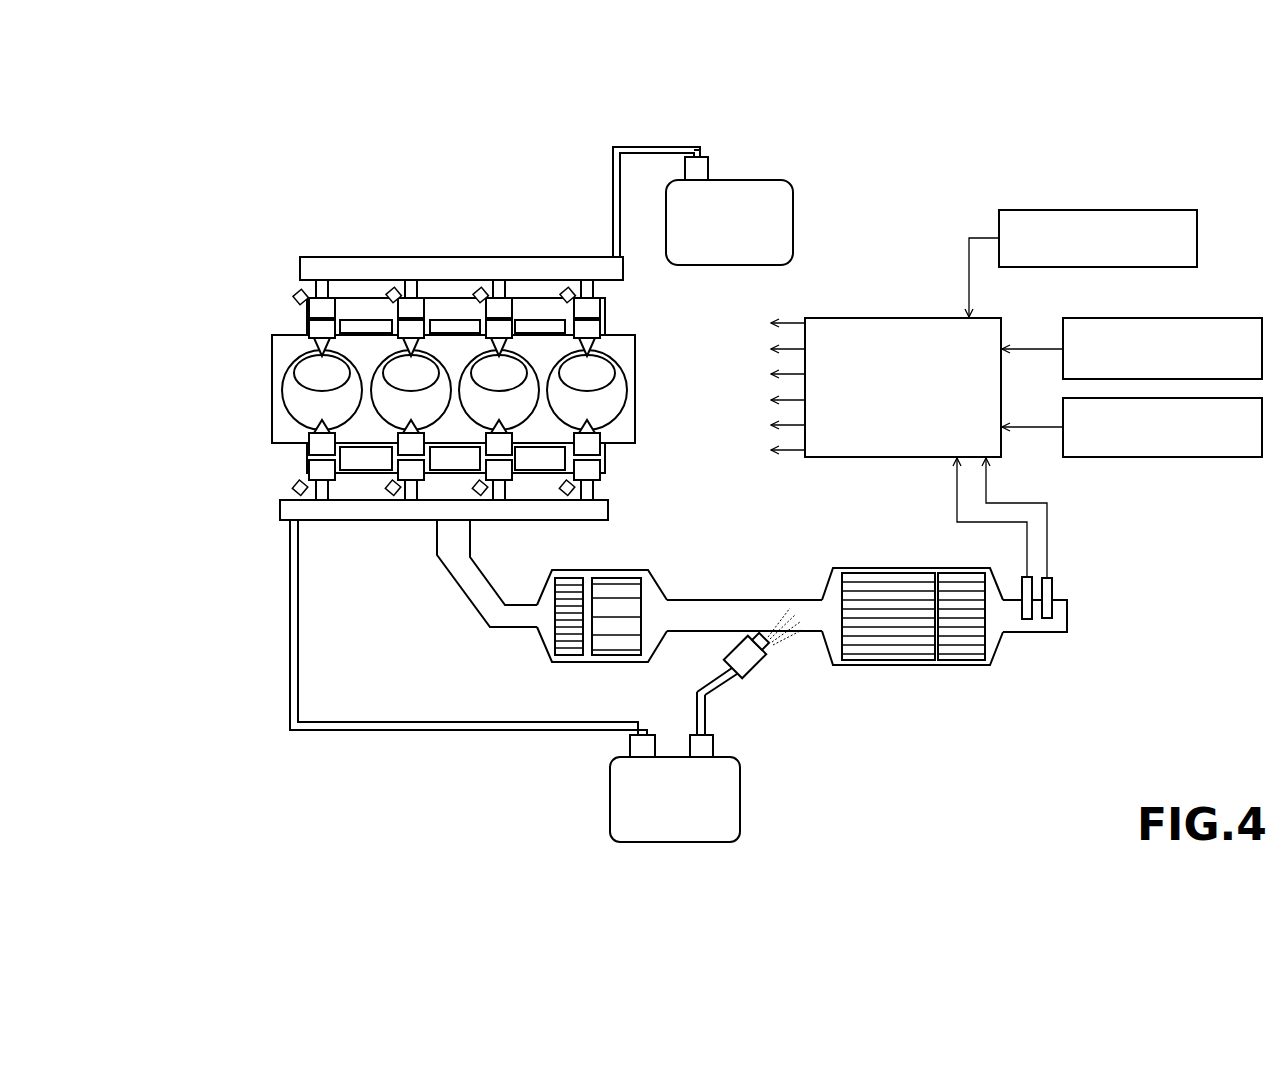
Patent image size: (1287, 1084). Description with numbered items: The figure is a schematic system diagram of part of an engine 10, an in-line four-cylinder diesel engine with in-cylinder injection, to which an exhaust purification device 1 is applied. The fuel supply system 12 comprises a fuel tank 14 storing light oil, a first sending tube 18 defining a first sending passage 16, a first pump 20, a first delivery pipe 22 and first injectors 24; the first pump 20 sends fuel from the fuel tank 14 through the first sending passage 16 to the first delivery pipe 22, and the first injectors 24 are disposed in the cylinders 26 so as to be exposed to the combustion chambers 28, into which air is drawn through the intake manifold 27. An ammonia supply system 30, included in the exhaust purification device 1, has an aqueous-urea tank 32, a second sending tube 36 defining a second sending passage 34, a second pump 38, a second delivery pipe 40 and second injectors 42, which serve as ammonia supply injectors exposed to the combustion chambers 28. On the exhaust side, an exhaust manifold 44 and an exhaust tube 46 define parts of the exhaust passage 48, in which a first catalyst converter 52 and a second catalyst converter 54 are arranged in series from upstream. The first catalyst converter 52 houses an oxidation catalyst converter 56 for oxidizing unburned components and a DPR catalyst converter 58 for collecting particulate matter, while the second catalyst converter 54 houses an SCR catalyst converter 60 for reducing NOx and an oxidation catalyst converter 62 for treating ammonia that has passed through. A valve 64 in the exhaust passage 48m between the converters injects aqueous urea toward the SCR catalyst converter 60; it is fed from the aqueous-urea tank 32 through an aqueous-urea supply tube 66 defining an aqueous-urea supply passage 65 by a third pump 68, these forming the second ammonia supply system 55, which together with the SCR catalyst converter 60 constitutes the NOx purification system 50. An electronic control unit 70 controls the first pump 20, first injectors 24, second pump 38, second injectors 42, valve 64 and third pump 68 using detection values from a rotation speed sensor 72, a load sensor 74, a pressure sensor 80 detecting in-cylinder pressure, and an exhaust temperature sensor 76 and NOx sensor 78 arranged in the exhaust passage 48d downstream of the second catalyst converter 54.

The exhaust purification device 1 is at (382, 782).
The engine 10 is at (282, 212).
The fuel supply system 12 is at (238, 300).
The fuel tank 14 is at (786, 180).
The first sending passage 16 is at (645, 147).
The first sending tube 18 is at (698, 147).
The first pump 20 is at (710, 157).
The first delivery pipe 22 is at (368, 257).
The first injectors 24 is at (322, 300).
The cylinders 26 is at (338, 358).
The intake manifold 27 is at (607, 308).
The combustion chambers 28 is at (300, 403).
The ammonia supply system 30 is at (268, 570).
The aqueous-urea tank 32 is at (615, 812).
The second sending passage 34 is at (528, 732).
The second sending tube 36 is at (410, 722).
The second pump 38 is at (628, 748).
The second delivery pipe 40 is at (358, 520).
The second injectors 42 is at (322, 500).
The exhaust manifold 44 is at (607, 478).
The exhaust tube 46 is at (490, 628).
The exhaust passage 48 is at (473, 592).
The exhaust passage downstream of the DPR catalyst converter 48m is at (743, 600).
The exhaust passage downstream of the second catalyst converter 48d is at (1008, 622).
The NOx purification system 50 is at (908, 723).
The first catalyst converter 52 is at (623, 568).
The second catalyst converter 54 is at (875, 568).
The second ammonia supply system 55 is at (773, 787).
The oxidation catalyst converter 56 is at (560, 660).
The DPR catalyst converter 58 is at (642, 590).
The SCR catalyst converter 60 is at (893, 668).
The oxidation catalyst converter 62 is at (950, 662).
The valve 64 is at (760, 660).
The aqueous-urea supply passage 65 is at (706, 723).
The aqueous-urea supply tube 66 is at (707, 702).
The third pump 68 is at (715, 745).
The electronic control unit (ECU) 70 is at (875, 318).
The rotation speed sensor 72 is at (1210, 318).
The load sensor 74 is at (1172, 458).
The exhaust temperature sensor 76 is at (1050, 580).
The NOx sensor 78 is at (1025, 578).
The pressure sensor 80 is at (1098, 210).